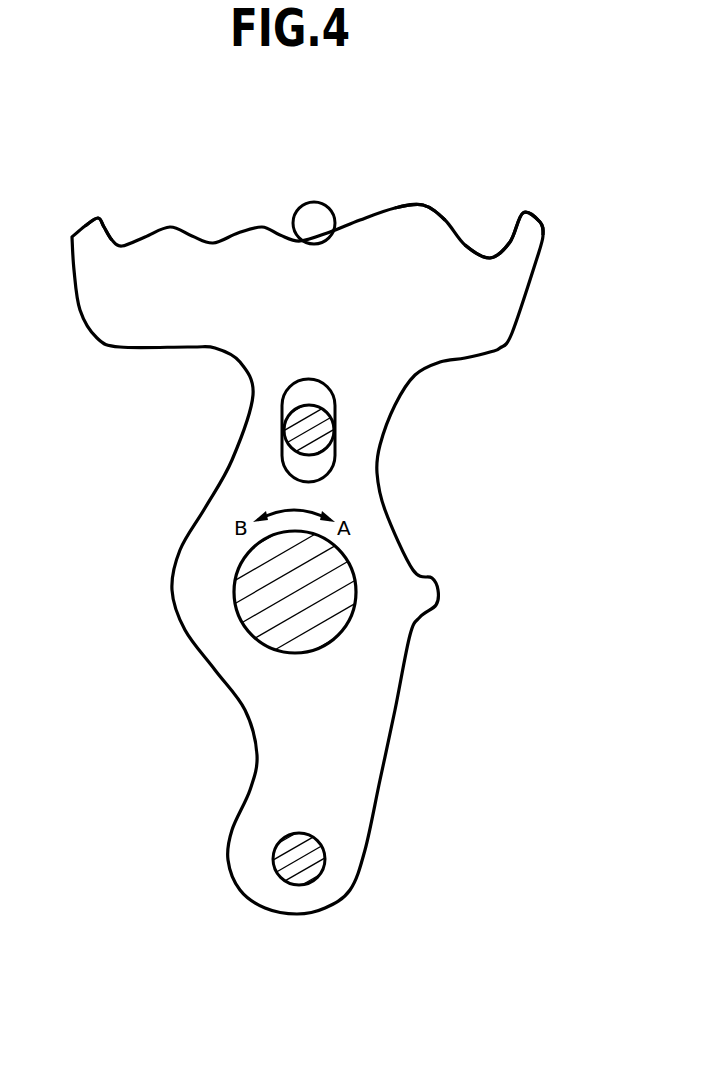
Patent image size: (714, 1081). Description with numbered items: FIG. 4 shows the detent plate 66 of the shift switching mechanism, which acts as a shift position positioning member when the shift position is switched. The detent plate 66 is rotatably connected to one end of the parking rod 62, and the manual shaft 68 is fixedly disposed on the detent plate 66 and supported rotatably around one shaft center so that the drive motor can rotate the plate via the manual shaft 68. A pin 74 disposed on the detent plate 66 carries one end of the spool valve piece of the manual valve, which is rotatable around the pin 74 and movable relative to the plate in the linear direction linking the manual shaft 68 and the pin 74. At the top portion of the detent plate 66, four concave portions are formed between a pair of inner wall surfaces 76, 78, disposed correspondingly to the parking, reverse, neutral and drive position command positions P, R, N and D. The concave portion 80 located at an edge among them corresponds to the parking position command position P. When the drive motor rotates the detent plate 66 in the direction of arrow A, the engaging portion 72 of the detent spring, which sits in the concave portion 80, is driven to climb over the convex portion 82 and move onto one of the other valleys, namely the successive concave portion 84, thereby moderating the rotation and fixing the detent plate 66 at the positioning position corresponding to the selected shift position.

The parking rod 62 is at (308, 866).
The detent plate 66 is at (367, 745).
The manual shaft 68 is at (323, 625).
The engaging portion 72 is at (323, 227).
The pin 74 is at (318, 436).
The inner wall surface 76 is at (517, 219).
The inner wall surface 78 is at (108, 236).
The concave portion 80 is at (507, 242).
The convex portion 82 is at (425, 220).
The successive concave portion 84 is at (425, 167).